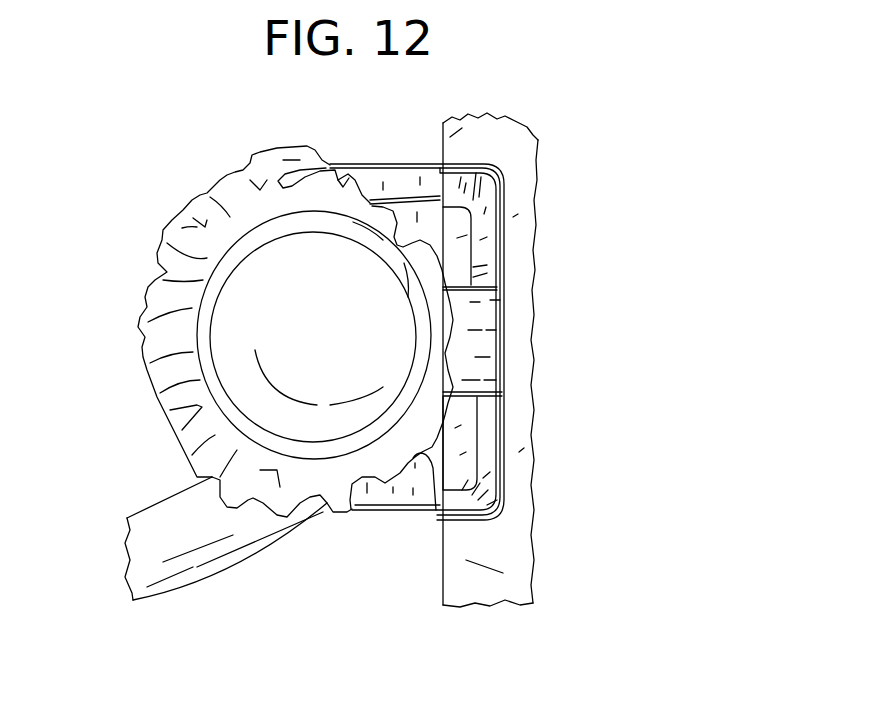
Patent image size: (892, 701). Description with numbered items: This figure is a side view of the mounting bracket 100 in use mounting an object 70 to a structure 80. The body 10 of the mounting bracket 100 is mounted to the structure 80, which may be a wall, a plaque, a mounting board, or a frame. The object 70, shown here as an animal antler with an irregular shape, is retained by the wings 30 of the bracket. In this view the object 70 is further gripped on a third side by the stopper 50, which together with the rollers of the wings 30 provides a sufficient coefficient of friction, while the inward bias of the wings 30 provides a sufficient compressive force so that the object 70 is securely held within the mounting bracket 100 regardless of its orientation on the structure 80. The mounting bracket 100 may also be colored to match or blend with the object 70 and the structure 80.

The body 10 is at (508, 437).
The wings 30 is at (380, 180).
The stopper 50 is at (478, 340).
The object 70 is at (230, 334).
The structure 80 is at (522, 268).
The mounting bracket 100 is at (549, 191).